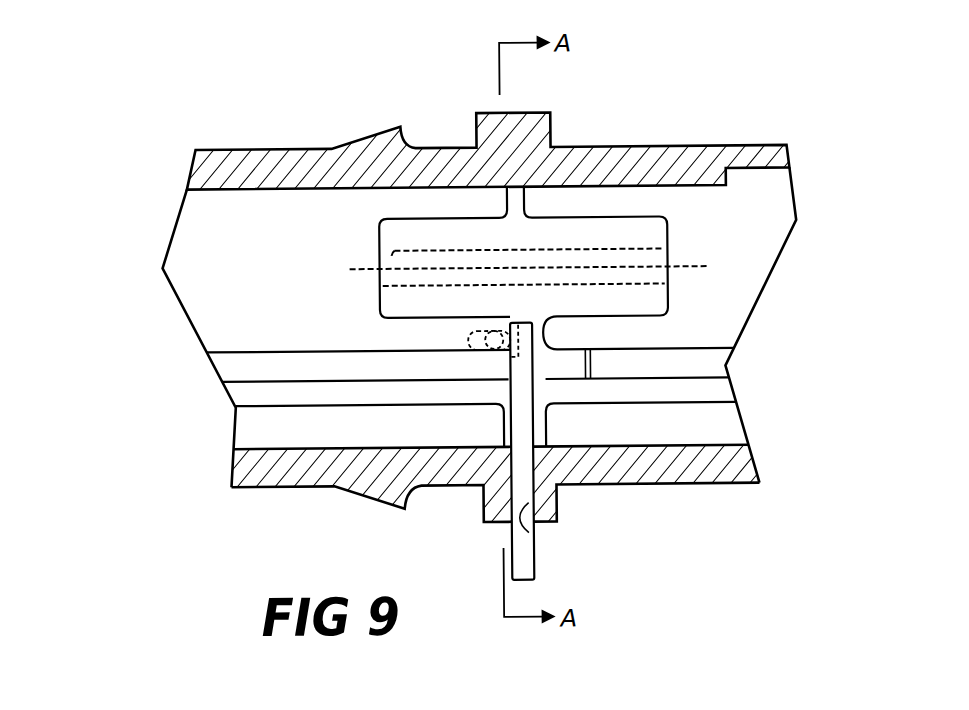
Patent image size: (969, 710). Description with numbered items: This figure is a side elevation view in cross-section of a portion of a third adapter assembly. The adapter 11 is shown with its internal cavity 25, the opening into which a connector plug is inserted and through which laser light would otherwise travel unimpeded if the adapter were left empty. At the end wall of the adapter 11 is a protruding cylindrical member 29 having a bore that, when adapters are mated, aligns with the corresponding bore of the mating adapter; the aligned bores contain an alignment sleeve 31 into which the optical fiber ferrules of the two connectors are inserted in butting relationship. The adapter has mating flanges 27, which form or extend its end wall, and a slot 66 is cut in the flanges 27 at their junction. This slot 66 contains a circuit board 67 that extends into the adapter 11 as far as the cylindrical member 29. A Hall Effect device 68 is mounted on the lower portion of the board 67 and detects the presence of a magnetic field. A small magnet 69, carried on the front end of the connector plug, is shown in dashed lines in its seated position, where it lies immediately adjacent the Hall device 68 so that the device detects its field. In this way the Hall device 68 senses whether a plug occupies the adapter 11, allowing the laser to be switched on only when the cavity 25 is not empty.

The adapter 11 is at (247, 148).
The cavity 25 is at (205, 317).
The flanges 27 is at (480, 507).
The cylindrical member 29 is at (380, 298).
The alignment sleeve 31 is at (395, 252).
The slot 66 is at (535, 537).
The circuit board 67 is at (510, 537).
The Hall Effect device 68 is at (547, 333).
The magnet 69 is at (480, 331).